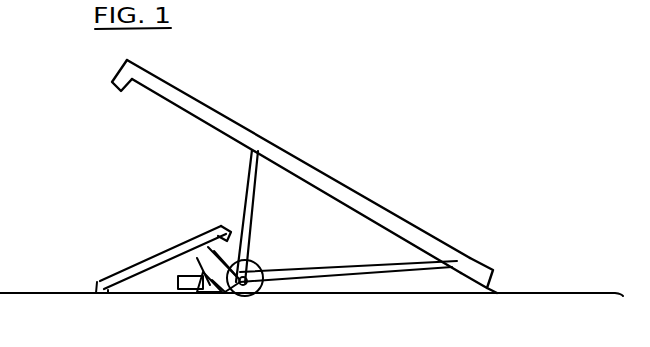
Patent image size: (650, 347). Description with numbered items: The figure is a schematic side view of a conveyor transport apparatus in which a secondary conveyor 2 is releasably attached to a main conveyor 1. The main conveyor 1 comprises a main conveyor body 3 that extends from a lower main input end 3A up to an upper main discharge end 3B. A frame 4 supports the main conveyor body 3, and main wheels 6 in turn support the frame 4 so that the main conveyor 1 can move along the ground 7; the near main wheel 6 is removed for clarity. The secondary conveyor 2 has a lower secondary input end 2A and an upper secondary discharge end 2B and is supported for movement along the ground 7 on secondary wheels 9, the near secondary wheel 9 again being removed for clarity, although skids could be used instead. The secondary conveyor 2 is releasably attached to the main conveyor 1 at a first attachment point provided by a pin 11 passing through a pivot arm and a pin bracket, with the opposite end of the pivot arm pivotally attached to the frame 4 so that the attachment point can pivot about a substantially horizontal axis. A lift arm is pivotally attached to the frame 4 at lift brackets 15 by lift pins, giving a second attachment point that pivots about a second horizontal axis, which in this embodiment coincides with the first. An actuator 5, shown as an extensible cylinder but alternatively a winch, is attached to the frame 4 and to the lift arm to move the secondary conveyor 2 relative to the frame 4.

The main conveyor 1 is at (333, 170).
The secondary conveyor 2 is at (142, 252).
The lower secondary input end 2A is at (102, 282).
The upper secondary discharge end 2B is at (227, 227).
The main conveyor body 3 is at (333, 170).
The lower main input end 3A is at (495, 262).
The upper main discharge end 3B is at (137, 62).
The frame 4 is at (248, 176).
The actuator 5 is at (237, 272).
The main wheels 6 is at (257, 268).
The ground 7 is at (568, 294).
The secondary wheels 9 is at (177, 279).
The pin 11 is at (212, 280).
The lift brackets 15 is at (195, 287).